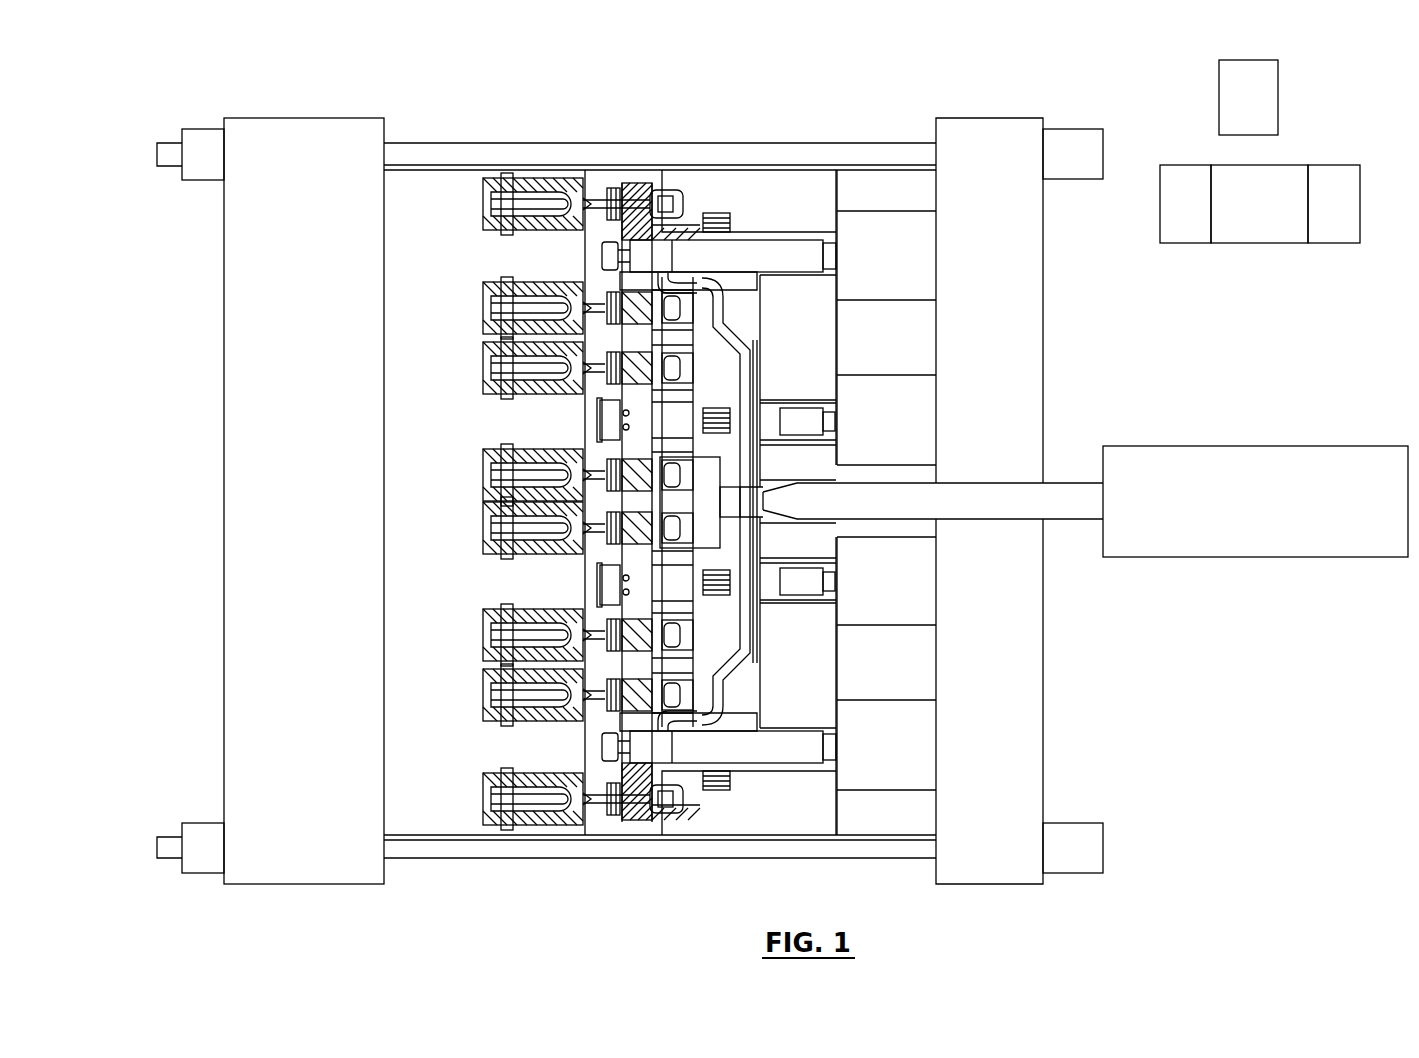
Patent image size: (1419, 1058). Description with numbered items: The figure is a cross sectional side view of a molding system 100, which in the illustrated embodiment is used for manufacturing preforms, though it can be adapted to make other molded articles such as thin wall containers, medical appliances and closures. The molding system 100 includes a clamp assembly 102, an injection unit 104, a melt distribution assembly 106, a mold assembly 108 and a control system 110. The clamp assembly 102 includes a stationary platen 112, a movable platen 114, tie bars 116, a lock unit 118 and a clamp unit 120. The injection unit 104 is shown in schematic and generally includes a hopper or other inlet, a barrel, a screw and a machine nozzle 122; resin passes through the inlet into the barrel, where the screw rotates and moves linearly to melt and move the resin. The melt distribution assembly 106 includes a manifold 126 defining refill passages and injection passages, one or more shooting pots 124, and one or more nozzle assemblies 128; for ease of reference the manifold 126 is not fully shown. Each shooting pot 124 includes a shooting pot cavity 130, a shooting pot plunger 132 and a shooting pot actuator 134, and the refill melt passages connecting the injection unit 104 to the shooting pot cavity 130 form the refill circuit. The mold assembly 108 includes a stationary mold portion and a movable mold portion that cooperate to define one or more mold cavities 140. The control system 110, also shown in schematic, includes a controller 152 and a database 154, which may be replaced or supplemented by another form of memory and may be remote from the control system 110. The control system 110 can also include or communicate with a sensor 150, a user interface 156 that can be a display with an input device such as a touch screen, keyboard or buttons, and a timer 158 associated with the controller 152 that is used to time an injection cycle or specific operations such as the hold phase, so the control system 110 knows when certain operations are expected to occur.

The molding system 100 is at (212, 538).
The clamp assembly 102 is at (1001, 493).
The injection unit 104 is at (1310, 577).
The melt distribution assembly 106 is at (777, 498).
The mold assembly 108 is at (762, 498).
The control system 110 is at (1250, 272).
The stationary platen 112 is at (1013, 147).
The movable platen 114 is at (338, 133).
The tie bars 116 is at (500, 153).
The lock unit 118 is at (200, 128).
The clamp unit 120 is at (1093, 153).
The machine nozzle 122 is at (1000, 508).
The shooting pot 124 is at (687, 243).
The manifold 126 is at (750, 360).
The nozzle assembly 128 is at (613, 802).
The shooting pot cavity 130 is at (658, 745).
The shooting pot plunger 132 is at (803, 750).
The shooting pot actuator 134 is at (922, 757).
The mold cavity 140 is at (533, 548).
The sensor 150 is at (718, 210).
The controller 152 is at (1257, 243).
The database 154 is at (1263, 105).
The user interface 156 is at (1330, 230).
The timer 158 is at (1182, 225).